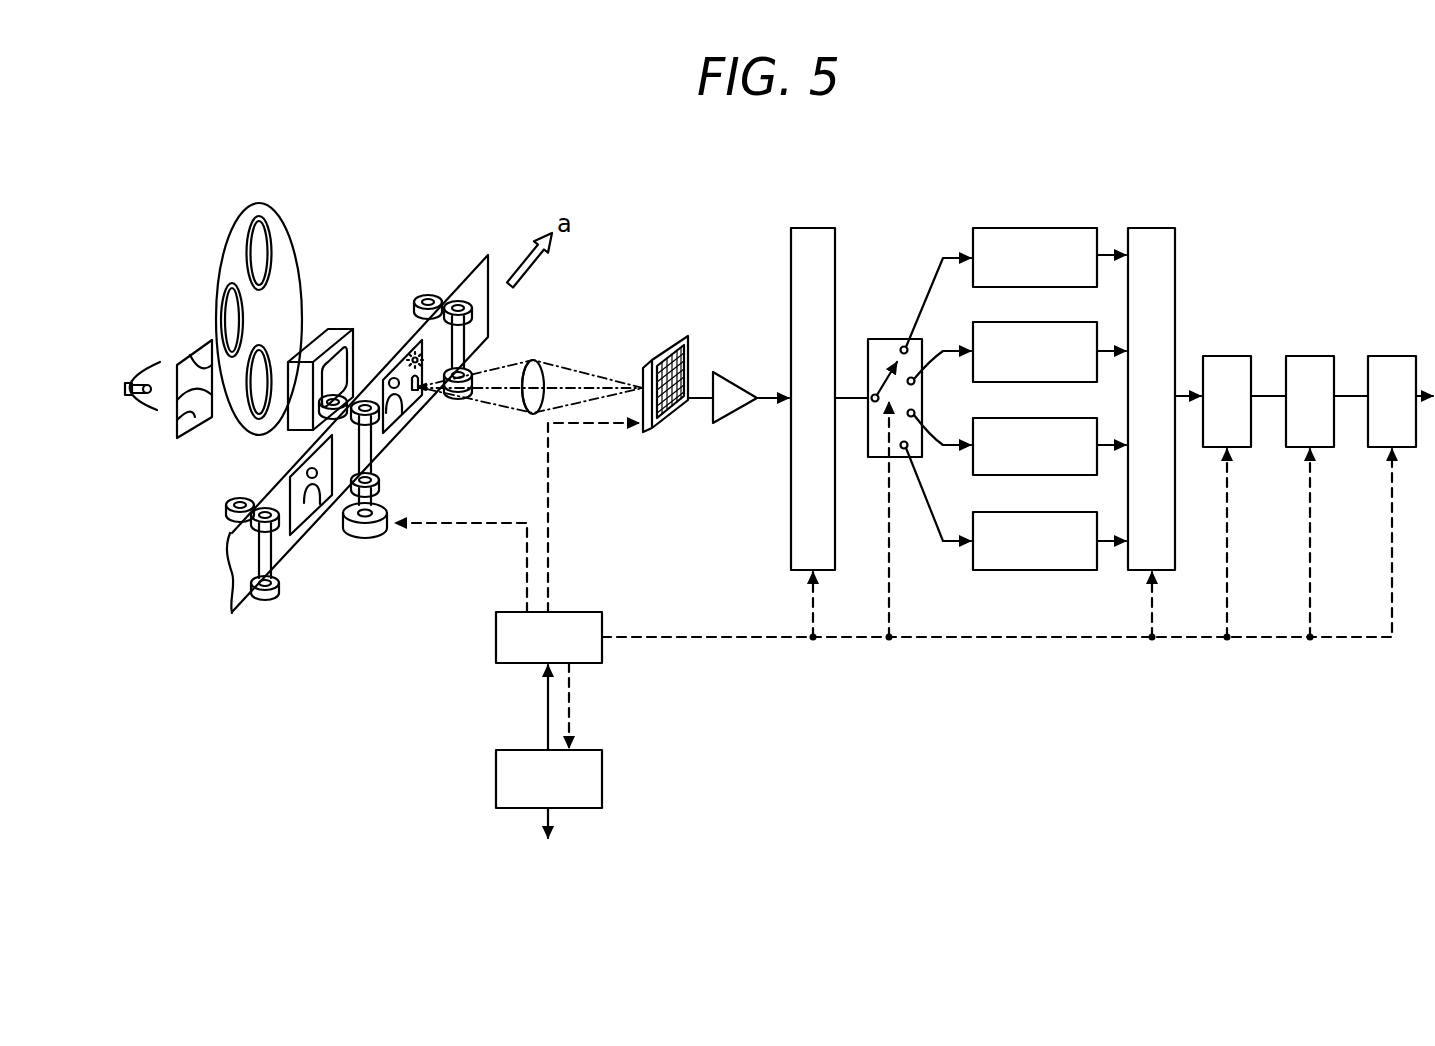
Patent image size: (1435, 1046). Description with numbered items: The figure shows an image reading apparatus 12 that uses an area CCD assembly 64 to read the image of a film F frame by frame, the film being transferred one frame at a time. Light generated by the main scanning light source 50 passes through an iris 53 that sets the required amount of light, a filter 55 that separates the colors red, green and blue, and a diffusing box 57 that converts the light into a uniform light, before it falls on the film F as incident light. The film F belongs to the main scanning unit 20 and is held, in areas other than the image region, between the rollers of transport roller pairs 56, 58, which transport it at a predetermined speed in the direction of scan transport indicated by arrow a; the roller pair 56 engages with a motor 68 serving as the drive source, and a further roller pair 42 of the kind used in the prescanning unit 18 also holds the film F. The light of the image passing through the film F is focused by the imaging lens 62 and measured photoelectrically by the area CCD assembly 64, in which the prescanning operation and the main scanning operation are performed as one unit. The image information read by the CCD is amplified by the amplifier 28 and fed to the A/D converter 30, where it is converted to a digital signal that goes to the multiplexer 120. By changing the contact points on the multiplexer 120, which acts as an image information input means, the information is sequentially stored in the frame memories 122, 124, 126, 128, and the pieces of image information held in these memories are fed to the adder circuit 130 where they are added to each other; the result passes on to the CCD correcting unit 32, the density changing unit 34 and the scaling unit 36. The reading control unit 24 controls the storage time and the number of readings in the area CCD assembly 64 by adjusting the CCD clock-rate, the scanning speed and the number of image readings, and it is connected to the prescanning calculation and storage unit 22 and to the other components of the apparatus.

The image reading apparatus 12 is at (694, 246).
The prescanning unit 18 is at (379, 265).
The main scanning unit 20 is at (357, 395).
The prescanning calculation and storage unit 22 is at (562, 792).
The reading control unit 24 is at (562, 652).
The amplifier 28 is at (728, 373).
The A/D converter 30 is at (816, 228).
The CCD correcting unit 32 is at (1213, 412).
The density changing unit 34 is at (1296, 412).
The scaling unit 36 is at (1378, 412).
The roller pair 42 is at (232, 504).
The main scanning light source 50 is at (157, 360).
The iris 53 is at (183, 366).
The filter 55 is at (248, 210).
The transport roller pair 56 is at (376, 477).
The diffusing box 57 is at (324, 330).
The transport roller pair 58 is at (458, 298).
The imaging lens 62 is at (538, 372).
The area CCD assembly 64 is at (663, 347).
The motor 68 is at (388, 513).
The multiplexer 120 is at (888, 339).
The frame memory 122 is at (1040, 228).
The frame memory 124 is at (1040, 325).
The frame memory 126 is at (1040, 421).
The frame memory 128 is at (1040, 515).
The adder circuit 130 is at (1155, 228).